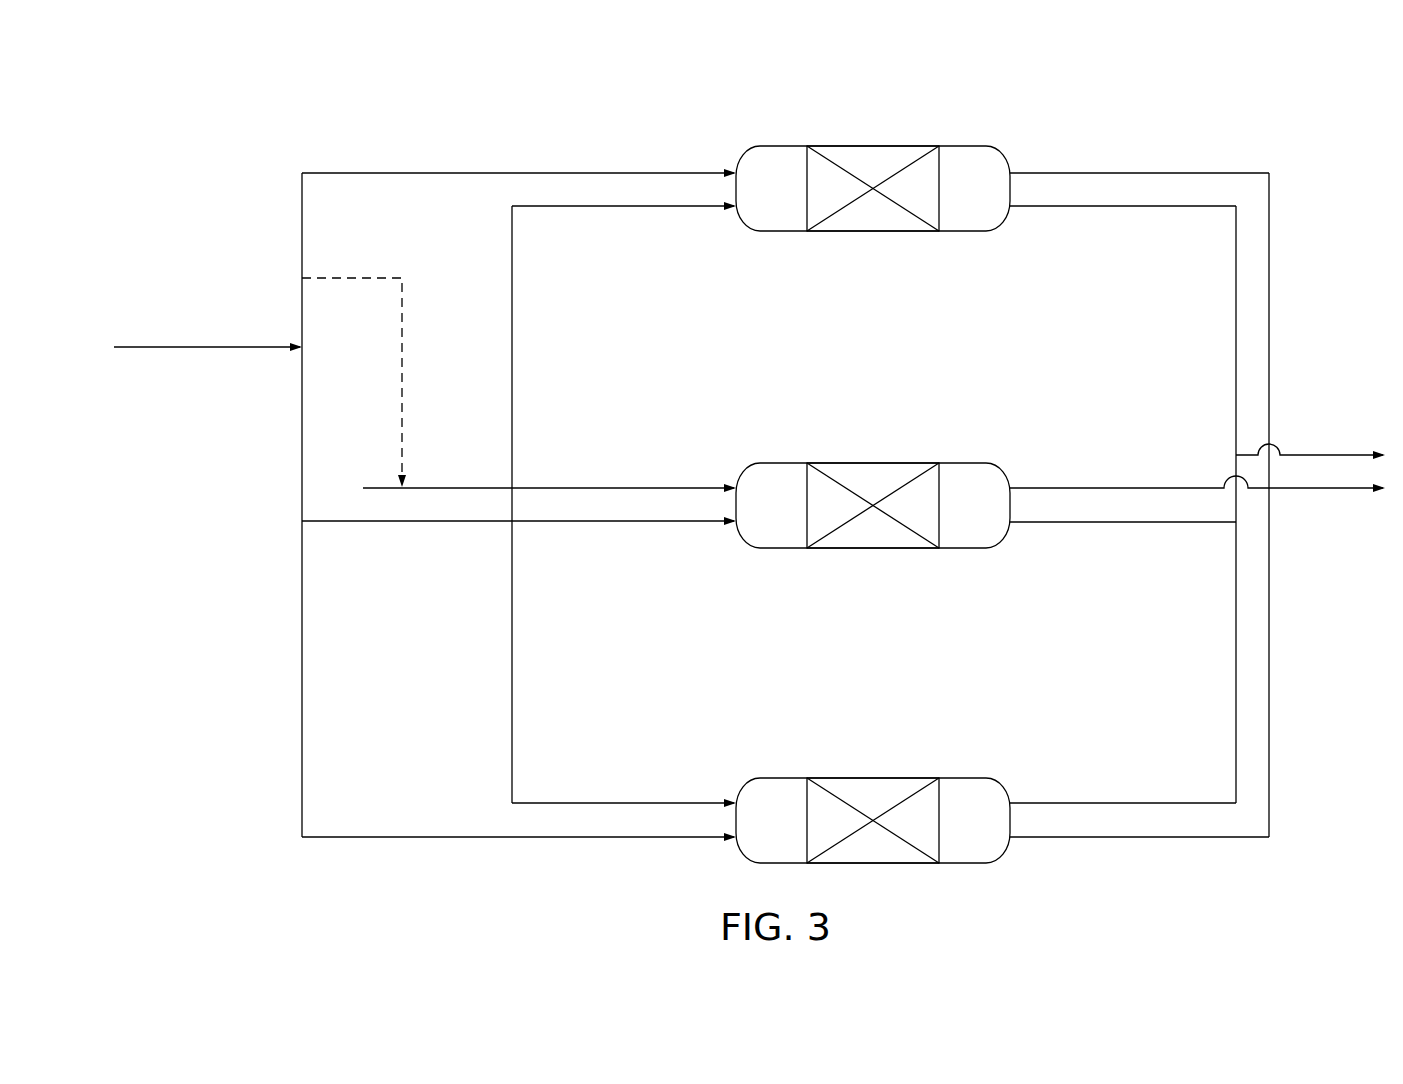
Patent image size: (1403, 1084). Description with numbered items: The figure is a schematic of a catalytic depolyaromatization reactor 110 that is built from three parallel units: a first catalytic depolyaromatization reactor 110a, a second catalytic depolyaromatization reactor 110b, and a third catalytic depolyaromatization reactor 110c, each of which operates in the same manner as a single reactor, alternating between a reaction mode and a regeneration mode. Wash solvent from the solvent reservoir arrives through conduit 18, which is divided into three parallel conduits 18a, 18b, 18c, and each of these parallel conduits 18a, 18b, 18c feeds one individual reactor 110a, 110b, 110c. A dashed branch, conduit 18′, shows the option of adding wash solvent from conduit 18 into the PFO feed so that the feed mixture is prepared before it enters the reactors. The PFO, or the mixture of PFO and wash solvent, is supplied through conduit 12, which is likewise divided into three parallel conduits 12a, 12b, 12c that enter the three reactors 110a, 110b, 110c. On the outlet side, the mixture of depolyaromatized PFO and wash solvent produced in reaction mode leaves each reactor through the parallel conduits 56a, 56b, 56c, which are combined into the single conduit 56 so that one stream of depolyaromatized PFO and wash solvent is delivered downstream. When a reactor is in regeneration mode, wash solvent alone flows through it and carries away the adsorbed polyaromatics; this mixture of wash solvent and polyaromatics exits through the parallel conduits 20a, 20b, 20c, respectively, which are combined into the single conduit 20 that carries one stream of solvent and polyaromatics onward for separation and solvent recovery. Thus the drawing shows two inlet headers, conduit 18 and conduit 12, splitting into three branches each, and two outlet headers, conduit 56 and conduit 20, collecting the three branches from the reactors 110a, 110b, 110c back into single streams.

The catalytic depolyaromatization reactor 110 is at (200, 142).
The first catalytic depolyaromatization reactor 110a is at (880, 146).
The second catalytic depolyaromatization reactor 110b is at (880, 463).
The third catalytic depolyaromatization reactor 110c is at (880, 778).
The conduit 18 is at (206, 346).
The conduit 18′ is at (352, 278).
The parallel conduit 18a is at (458, 172).
The parallel conduit 18b is at (457, 522).
The parallel conduit 18c is at (457, 838).
The conduit 12 is at (458, 487).
The parallel conduit 12a is at (614, 207).
The parallel conduit 12b is at (612, 487).
The parallel conduit 12c is at (612, 802).
The conduit 20 is at (1315, 454).
The parallel conduit 20a is at (1118, 207).
The parallel conduit 20b is at (1120, 523).
The parallel conduit 20c is at (1118, 804).
The conduit 56 is at (1312, 489).
The parallel conduit 56a is at (1122, 172).
The parallel conduit 56b is at (1120, 487).
The parallel conduit 56c is at (1122, 838).